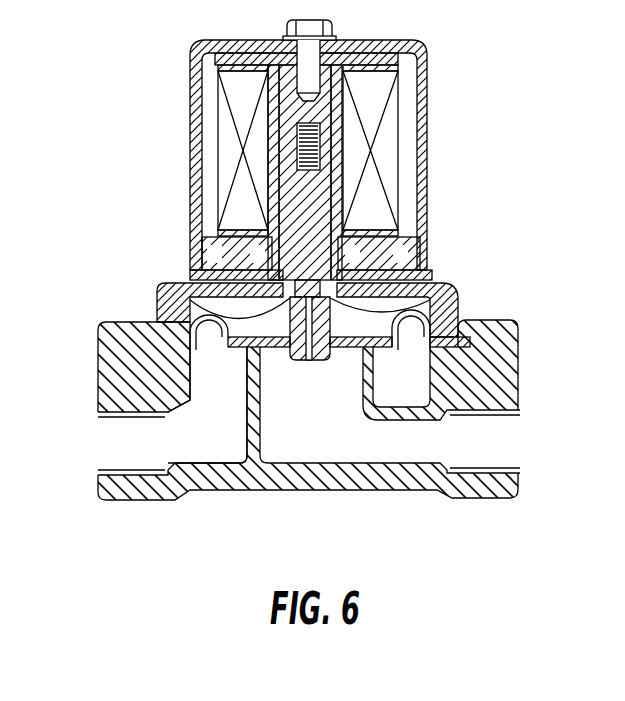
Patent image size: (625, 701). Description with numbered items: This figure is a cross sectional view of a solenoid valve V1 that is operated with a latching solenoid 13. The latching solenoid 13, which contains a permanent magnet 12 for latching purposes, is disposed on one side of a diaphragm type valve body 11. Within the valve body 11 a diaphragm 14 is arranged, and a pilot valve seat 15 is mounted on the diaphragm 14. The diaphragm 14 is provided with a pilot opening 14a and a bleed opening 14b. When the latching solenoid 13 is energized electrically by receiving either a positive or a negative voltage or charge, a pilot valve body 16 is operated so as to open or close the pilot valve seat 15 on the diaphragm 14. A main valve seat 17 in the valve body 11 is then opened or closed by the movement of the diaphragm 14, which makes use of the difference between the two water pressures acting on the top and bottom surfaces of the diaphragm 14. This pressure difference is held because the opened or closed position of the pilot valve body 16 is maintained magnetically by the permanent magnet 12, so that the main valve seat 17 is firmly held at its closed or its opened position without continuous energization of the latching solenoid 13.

The solenoid valve V1 is at (449, 50).
The diaphragm type valve body 11 is at (272, 490).
The permanent magnet 12 is at (205, 240).
The latching solenoid 13 is at (225, 147).
The diaphragm 14 is at (283, 372).
The pilot opening 14a is at (312, 368).
The bleed opening 14b is at (247, 353).
The pilot valve seat 15 is at (447, 278).
The pilot valve body 16 is at (190, 300).
The main valve seat 17 is at (222, 395).